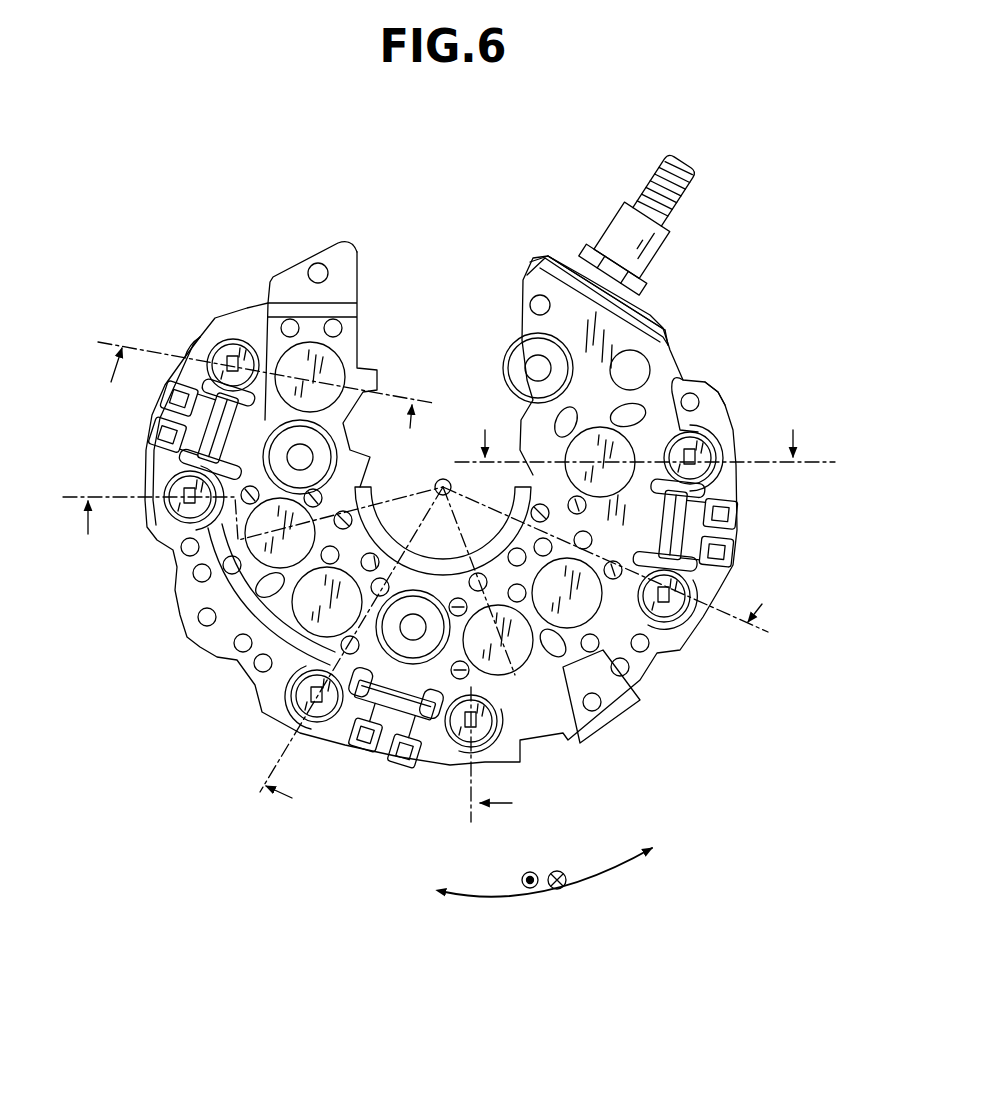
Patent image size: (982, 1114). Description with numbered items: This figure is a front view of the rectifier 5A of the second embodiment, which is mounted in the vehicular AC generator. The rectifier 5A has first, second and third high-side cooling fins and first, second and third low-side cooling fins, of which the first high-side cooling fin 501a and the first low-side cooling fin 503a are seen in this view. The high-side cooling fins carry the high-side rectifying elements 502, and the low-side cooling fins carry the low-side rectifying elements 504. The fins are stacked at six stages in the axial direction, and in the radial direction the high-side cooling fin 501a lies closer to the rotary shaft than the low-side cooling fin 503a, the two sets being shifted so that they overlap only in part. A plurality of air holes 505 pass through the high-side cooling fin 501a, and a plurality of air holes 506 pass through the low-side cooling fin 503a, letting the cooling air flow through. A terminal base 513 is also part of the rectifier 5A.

The rectifier 5A is at (455, 226).
The high-side rectifying element 502 is at (310, 360).
The low-side rectifying element 504 is at (238, 357).
The first high-side cooling fin 501a is at (640, 322).
The first low-side cooling fin 503a is at (705, 398).
The air hole 505 is at (712, 562).
The terminal base 513 is at (700, 538).
The air hole 506 is at (640, 680).